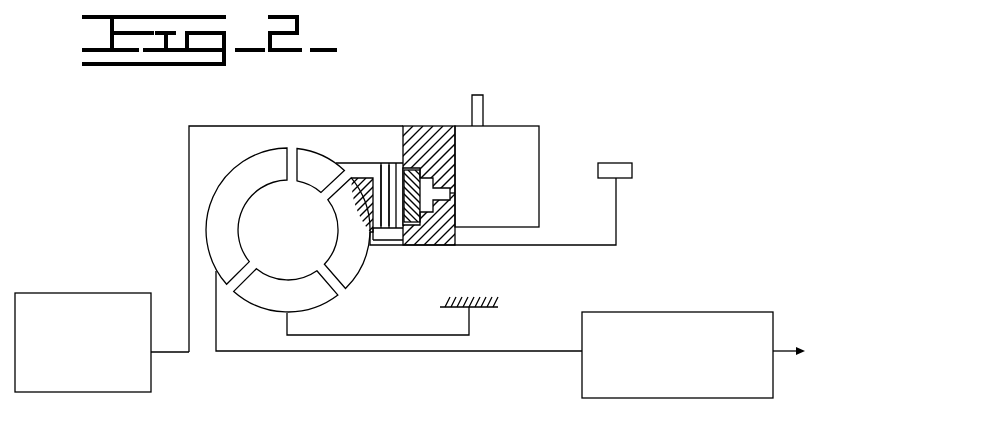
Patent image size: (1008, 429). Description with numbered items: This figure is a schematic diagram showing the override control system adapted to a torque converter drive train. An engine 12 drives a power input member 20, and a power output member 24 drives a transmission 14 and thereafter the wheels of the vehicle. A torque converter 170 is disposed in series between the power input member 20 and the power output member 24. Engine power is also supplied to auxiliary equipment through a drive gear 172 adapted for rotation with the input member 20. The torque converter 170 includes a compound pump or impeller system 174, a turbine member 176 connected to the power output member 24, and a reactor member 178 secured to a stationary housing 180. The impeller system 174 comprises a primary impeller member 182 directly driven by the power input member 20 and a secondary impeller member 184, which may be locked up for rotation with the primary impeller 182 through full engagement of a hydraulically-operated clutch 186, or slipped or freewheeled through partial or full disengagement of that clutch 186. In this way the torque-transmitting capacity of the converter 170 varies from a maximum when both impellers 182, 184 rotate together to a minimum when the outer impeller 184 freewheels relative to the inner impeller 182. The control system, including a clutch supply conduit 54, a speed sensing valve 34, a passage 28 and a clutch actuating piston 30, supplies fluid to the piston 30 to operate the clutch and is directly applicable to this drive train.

The engine 12 is at (62, 295).
The transmission 14 is at (690, 318).
The power input member 20 is at (170, 352).
The power output member 24 is at (350, 352).
The passage 28 is at (447, 212).
The clutch actuating piston 30 is at (410, 215).
The speed sensing valve 34 is at (540, 213).
The clutch supply conduit 54 is at (483, 110).
The torque converter 170 is at (176, 126).
The drive gear 172 is at (613, 168).
The compound pump or impeller system 174 is at (334, 146).
The turbine member 176 is at (238, 236).
The reactor member 178 is at (272, 309).
The stationary housing 180 is at (476, 308).
The primary impeller member 182 is at (338, 251).
The secondary impeller member 184 is at (328, 170).
The hydraulically-operated clutch 186 is at (385, 150).